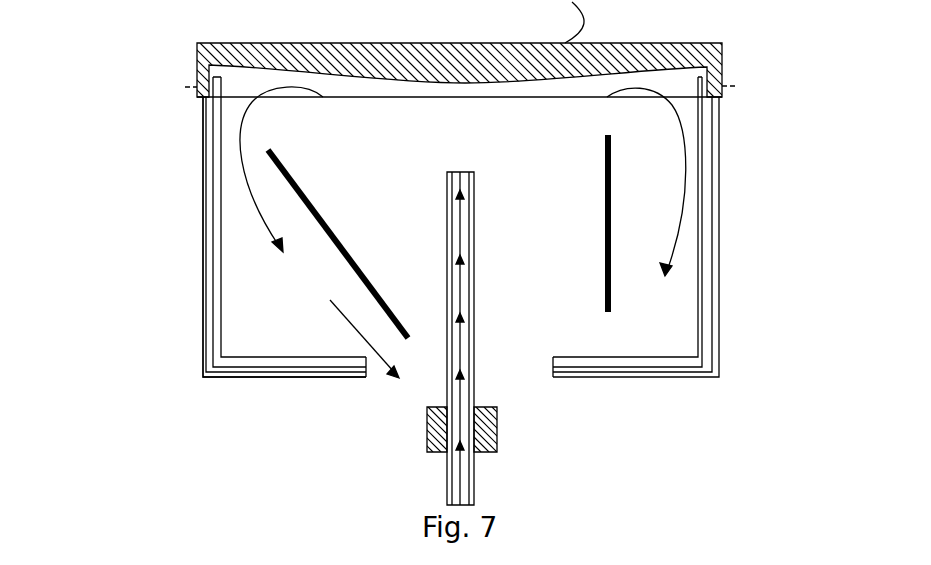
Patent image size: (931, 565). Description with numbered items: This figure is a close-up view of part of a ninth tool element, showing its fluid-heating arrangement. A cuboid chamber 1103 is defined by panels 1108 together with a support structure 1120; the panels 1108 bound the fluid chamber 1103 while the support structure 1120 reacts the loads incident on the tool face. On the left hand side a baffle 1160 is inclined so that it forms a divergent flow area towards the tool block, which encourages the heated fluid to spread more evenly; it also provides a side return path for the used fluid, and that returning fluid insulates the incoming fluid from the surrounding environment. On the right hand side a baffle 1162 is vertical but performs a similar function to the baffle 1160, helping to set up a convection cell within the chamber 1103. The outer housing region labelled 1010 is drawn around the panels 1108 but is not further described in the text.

The housing 1010 is at (730, 204).
The cuboid chamber 1103 is at (571, 252).
The panels 1108 is at (204, 242).
The support structure 1120 is at (220, 178).
The baffle 1160 is at (340, 253).
The baffle 1162 is at (611, 264).